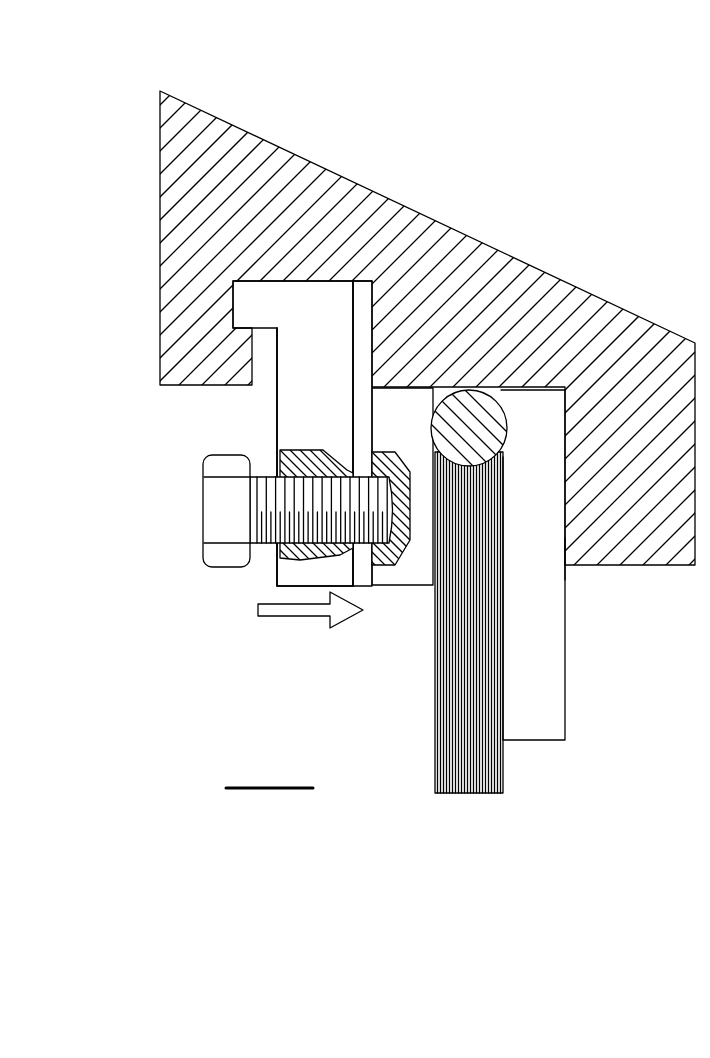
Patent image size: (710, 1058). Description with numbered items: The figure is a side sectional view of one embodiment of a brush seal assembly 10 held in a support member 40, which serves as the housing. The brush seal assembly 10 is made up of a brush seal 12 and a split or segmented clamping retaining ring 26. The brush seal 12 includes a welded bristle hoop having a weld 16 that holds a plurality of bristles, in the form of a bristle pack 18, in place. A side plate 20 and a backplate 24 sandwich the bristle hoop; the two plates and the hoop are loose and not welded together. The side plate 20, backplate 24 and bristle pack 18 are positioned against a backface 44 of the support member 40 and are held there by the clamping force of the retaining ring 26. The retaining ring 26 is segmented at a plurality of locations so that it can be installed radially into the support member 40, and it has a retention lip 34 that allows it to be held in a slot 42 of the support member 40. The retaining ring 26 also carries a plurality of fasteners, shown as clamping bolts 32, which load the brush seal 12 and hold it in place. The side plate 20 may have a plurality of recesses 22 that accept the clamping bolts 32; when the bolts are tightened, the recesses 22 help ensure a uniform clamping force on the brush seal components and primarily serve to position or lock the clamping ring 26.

The brush seal assembly 10 is at (130, 414).
The brush seal 12 is at (527, 627).
The weld 16 is at (507, 436).
The bristle pack 18 is at (418, 808).
The side plate 20 is at (415, 585).
The recesses 22 is at (387, 456).
The backplate 24 is at (565, 648).
The clamping retaining ring 26 is at (258, 429).
The clamping bolts 32 is at (227, 567).
The retention lip 34 is at (250, 303).
The support member 40 is at (617, 300).
The slot 42 is at (267, 345).
The backface 44 is at (565, 538).